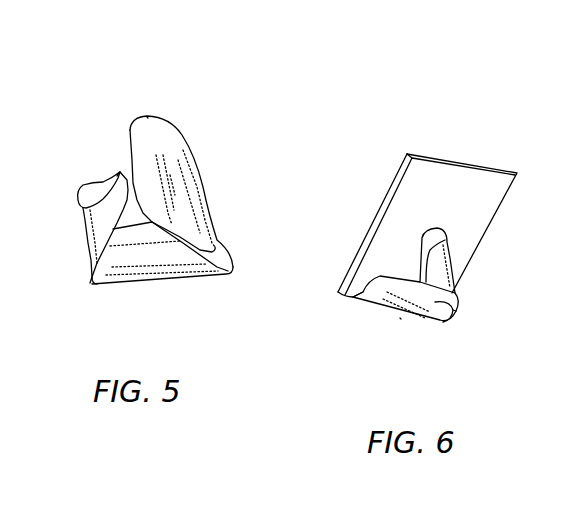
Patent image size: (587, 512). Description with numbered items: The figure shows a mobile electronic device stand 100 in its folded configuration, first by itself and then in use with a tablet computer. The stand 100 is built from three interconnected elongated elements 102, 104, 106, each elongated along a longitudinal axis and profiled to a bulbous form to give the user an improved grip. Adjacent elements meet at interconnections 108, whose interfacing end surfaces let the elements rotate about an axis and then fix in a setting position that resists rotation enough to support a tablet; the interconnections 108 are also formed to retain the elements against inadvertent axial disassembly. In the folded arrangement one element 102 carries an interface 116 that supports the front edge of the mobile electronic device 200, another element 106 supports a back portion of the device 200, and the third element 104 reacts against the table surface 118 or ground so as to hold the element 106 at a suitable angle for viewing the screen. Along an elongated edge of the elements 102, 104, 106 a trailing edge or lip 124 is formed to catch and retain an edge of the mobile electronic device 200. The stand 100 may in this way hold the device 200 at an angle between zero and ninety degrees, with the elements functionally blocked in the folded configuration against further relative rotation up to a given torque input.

In FIG. 5, the mobile electronic device stand 100 is at (163, 101).
In FIG. 6, the mobile electronic device stand 100 is at (397, 317).
In FIG. 5, the element 102 is at (83, 227).
In FIG. 6, the element 102 is at (353, 310).
In FIG. 5, the element 104 is at (163, 286).
In FIG. 6, the element 104 is at (455, 288).
In FIG. 5, the element 106 is at (188, 196).
In FIG. 6, the element 106 is at (446, 254).
In FIG. 5, the interconnection 108 is at (221, 242).
In FIG. 5, the interface 116 is at (103, 180).
In FIG. 6, the interface 116 is at (338, 292).
In FIG. 6, the table surface 118 is at (460, 320).
In FIG. 5, the lip 124 is at (120, 166).
In FIG. 6, the mobile electronic device 200 is at (495, 165).